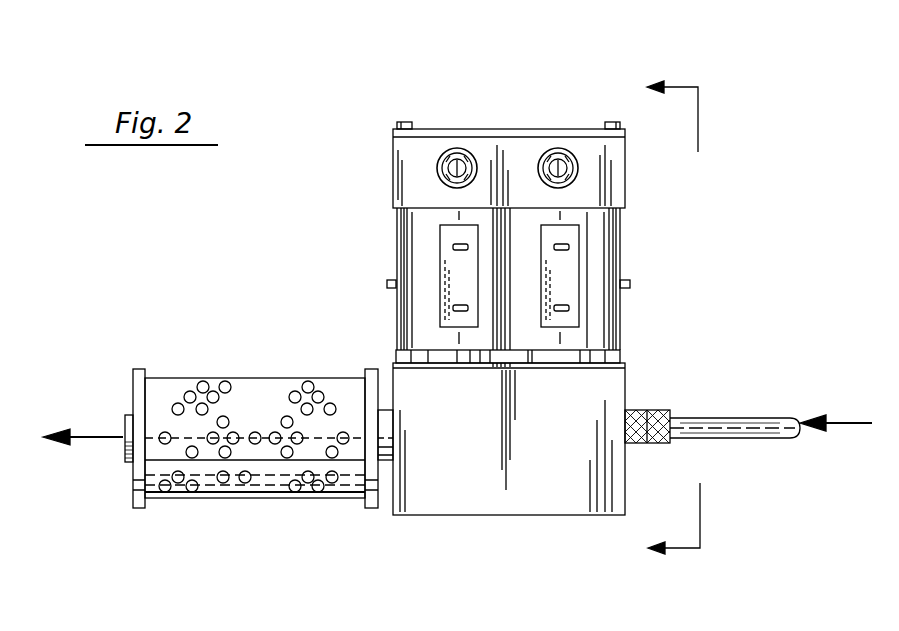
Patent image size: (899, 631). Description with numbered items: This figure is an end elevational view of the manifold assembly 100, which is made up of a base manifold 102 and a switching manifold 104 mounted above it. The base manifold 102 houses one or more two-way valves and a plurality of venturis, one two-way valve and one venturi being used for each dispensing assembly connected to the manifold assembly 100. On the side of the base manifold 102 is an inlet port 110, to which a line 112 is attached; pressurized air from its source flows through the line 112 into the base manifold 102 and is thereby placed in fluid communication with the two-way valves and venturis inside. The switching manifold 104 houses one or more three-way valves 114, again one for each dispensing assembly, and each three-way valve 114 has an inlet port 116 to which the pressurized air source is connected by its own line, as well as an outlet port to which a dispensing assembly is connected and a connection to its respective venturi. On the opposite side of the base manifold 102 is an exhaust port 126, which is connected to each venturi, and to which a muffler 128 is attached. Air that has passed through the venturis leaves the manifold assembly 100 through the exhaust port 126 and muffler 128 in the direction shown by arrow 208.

The manifold assembly 100 is at (387, 102).
The base manifold 102 is at (460, 470).
The switching manifold 104 is at (625, 177).
The inlet port 110 is at (638, 410).
The line 112 is at (730, 427).
The three-way valve 114 is at (460, 273).
The inlet port 116 is at (456, 146).
The exhaust port 126 is at (127, 428).
The muffler 128 is at (253, 460).
The arrow 208 is at (86, 440).